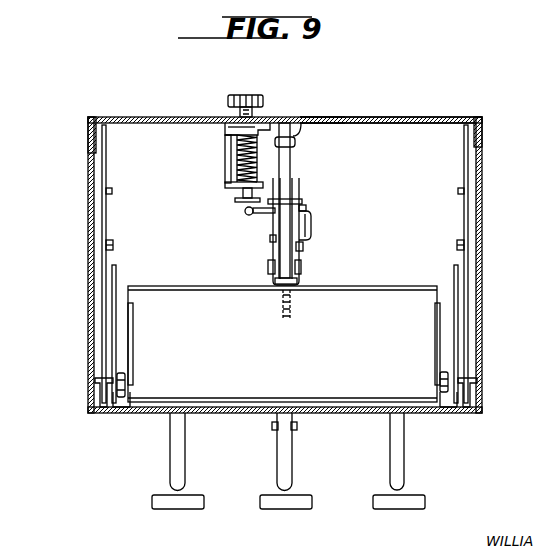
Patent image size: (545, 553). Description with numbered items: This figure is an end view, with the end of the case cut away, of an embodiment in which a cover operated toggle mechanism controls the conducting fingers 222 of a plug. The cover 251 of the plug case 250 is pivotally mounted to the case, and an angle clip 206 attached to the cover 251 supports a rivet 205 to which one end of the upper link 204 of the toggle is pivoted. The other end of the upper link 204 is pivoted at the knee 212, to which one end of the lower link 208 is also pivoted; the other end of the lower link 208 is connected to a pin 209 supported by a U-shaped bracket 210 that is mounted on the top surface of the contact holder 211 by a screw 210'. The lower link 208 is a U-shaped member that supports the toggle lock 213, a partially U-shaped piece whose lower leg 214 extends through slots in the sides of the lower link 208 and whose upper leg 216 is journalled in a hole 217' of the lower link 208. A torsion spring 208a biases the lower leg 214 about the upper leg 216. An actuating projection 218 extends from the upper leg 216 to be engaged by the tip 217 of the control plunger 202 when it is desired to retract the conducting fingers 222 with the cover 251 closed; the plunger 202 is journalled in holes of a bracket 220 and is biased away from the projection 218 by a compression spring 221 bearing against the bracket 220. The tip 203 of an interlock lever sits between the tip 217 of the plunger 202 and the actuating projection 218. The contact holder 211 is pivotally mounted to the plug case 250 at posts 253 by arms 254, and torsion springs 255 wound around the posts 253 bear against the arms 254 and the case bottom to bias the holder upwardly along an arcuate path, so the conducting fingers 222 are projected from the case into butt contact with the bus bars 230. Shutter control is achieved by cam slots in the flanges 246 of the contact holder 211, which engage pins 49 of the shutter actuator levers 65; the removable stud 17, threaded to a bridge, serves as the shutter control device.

The plug case 250 is at (177, 95).
The cover 251 is at (430, 117).
The angle clip 206 is at (322, 125).
The shutter actuator levers 65 is at (107, 150).
The pins 49 is at (114, 244).
The flanges 246 is at (118, 275).
The contact holder 211 is at (362, 288).
The arms 254 is at (134, 320).
The torsion springs 255 is at (127, 380).
The posts 253 is at (99, 381).
The conducting fingers 222 is at (253, 117).
The bus bars 230 is at (188, 510).
The stud 17 is at (272, 427).
The control plunger 202 is at (268, 94).
The bracket 220 is at (226, 158).
The compression spring 221 is at (237, 143).
The tip of control plunger 217 is at (225, 189).
The tip of interlock lever 203 is at (240, 200).
The actuating projection 218 is at (246, 213).
The upper leg 216 is at (262, 214).
The lower leg 214 is at (270, 241).
The upper link 204 is at (291, 160).
The rivet 205 is at (296, 143).
The hole 217' is at (304, 228).
The knee 212 is at (303, 203).
The torsion spring 208a is at (307, 207).
The toggle lock 213 is at (313, 226).
The lower link 208 is at (304, 247).
The pin 209 is at (302, 266).
The U-shaped bracket 210 is at (308, 279).
The screw 210' is at (310, 305).